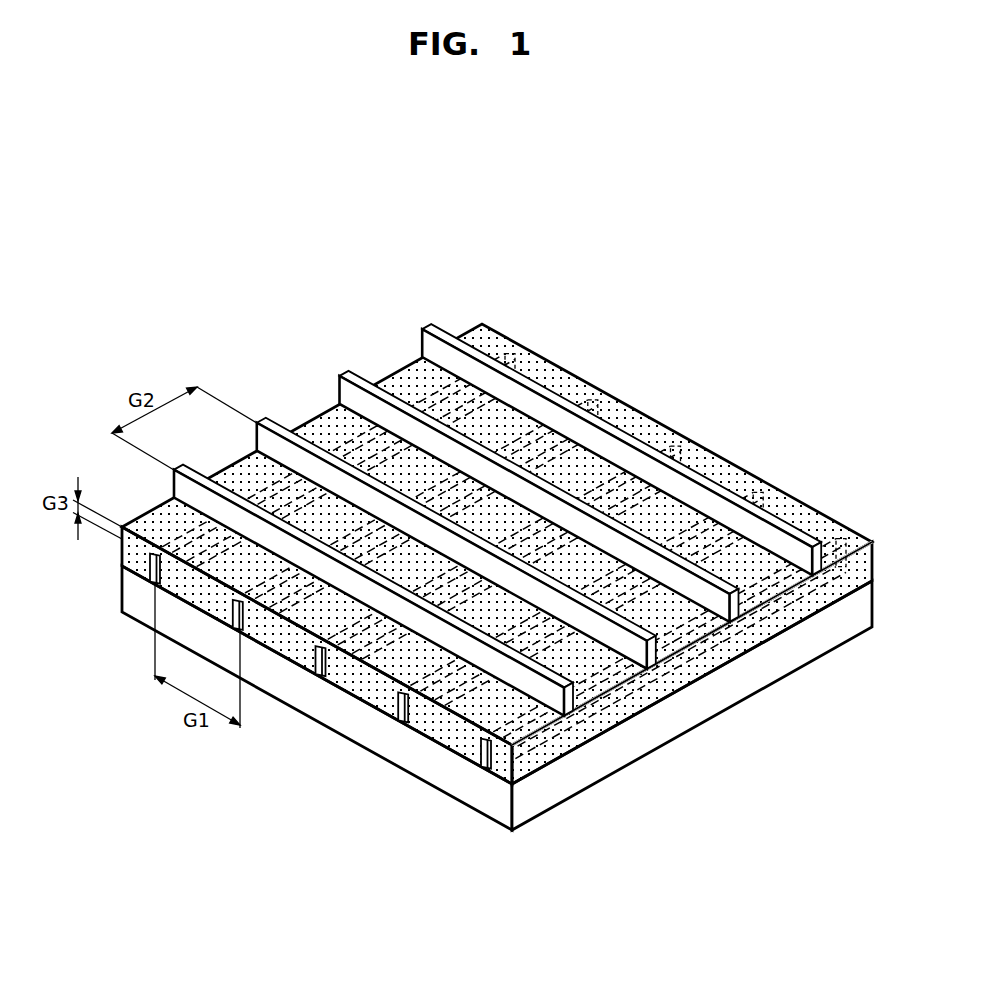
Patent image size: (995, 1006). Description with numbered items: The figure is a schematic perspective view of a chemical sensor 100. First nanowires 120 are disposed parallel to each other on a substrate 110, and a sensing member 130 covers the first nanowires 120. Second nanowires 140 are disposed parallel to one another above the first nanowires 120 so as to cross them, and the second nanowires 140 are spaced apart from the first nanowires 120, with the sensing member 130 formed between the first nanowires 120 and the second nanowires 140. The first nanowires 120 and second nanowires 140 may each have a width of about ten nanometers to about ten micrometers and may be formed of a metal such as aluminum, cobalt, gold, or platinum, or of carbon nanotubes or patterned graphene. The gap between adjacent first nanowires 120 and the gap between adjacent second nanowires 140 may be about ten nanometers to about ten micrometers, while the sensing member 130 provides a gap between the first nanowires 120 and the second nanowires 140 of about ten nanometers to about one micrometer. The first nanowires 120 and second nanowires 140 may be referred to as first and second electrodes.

The chemical sensor 100 is at (497, 526).
The substrate 110 is at (762, 680).
The first nanowires 120 is at (479, 763).
The sensing member 130 is at (790, 507).
The second nanowires 140 is at (708, 485).